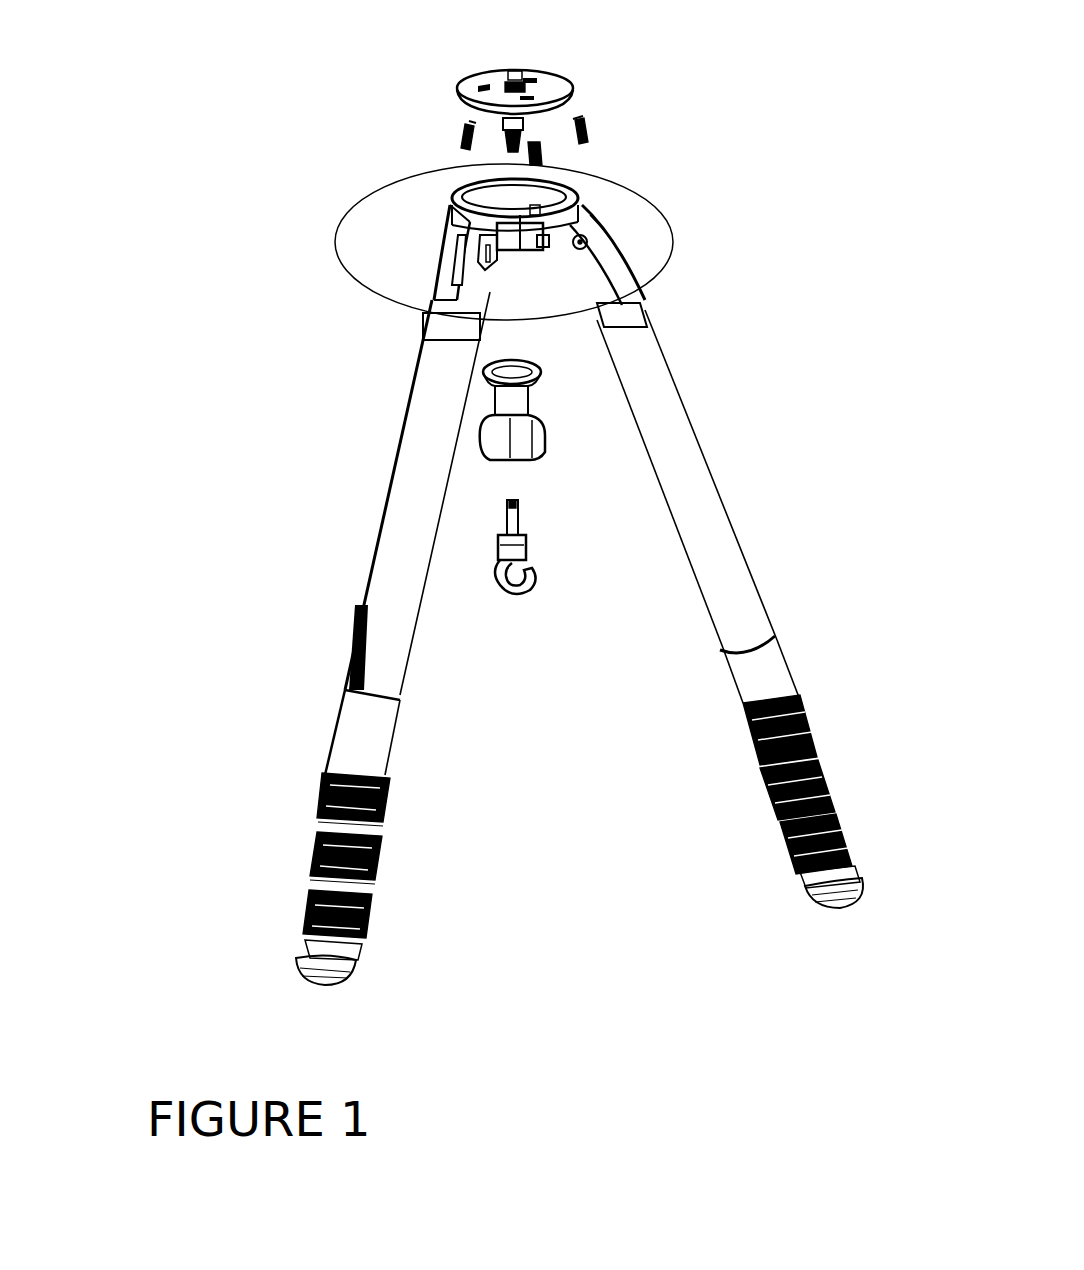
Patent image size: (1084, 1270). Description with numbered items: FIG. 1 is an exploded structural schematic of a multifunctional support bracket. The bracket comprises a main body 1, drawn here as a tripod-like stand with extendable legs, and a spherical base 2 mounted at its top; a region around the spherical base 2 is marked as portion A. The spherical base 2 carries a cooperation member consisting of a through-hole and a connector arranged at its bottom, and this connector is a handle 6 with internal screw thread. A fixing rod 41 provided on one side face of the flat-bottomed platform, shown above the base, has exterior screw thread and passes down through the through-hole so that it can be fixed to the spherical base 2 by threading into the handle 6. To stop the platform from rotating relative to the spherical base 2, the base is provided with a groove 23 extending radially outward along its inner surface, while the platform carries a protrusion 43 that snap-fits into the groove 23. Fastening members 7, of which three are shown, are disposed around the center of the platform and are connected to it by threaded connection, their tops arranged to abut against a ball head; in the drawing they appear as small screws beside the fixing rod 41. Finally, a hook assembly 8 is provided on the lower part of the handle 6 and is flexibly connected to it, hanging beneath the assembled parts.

The main body 1 is at (767, 450).
The spherical base 2 is at (570, 200).
The handle 6 is at (490, 432).
The fastening member 7 is at (462, 142).
The hook assembly 8 is at (485, 567).
The groove 23 is at (452, 222).
The fixing rod 41 is at (525, 133).
The protrusion 43 is at (457, 90).
The enlarged region A is at (672, 233).